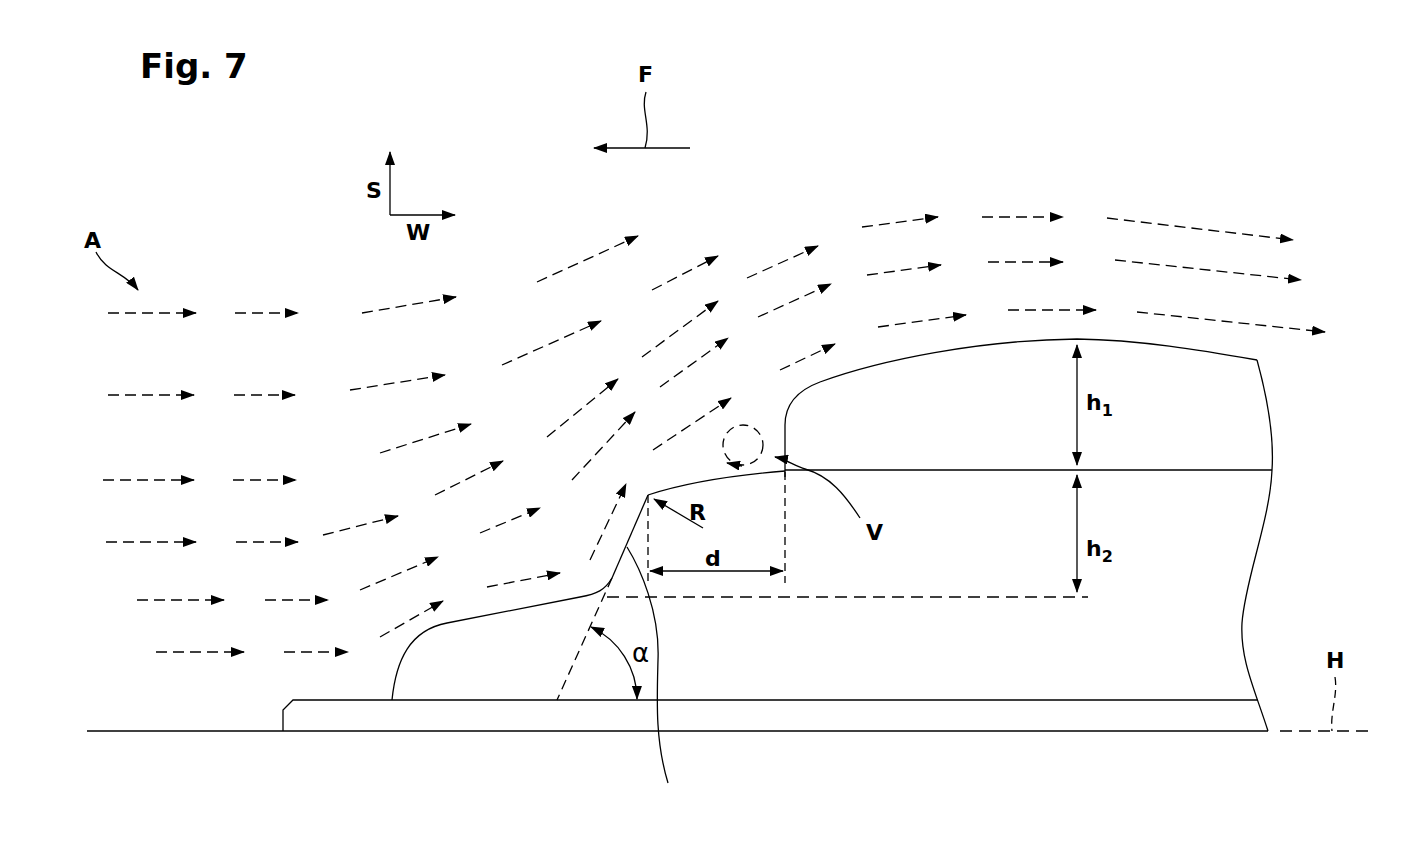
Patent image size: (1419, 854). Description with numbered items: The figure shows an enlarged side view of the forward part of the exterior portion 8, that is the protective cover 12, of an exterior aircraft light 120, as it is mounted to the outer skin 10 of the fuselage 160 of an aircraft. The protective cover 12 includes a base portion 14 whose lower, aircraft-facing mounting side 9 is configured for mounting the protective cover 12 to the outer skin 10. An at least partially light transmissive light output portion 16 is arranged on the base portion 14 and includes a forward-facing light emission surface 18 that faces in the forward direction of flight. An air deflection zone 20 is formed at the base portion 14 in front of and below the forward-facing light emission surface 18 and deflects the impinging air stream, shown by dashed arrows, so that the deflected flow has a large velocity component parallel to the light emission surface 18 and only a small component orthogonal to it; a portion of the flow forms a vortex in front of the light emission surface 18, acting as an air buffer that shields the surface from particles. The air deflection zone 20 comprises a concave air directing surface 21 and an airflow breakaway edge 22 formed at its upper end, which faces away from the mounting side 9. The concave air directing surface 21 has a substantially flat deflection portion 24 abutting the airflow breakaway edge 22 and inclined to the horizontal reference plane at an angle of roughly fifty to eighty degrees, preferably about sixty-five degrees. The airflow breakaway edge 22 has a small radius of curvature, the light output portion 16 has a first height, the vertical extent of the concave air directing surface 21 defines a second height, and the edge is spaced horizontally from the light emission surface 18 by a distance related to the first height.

The exterior portion 8 is at (1376, 305).
The mounting side 9 is at (565, 742).
The outer skin 10 is at (243, 731).
The protective cover 12 is at (1336, 428).
The base portion 14 is at (1290, 563).
The light output portion 16 is at (1288, 396).
The forward-facing light emission surface 18 is at (768, 420).
The air deflection zone 20 is at (606, 506).
The concave air directing surface 21 is at (615, 550).
The airflow breakaway edge 22 is at (647, 488).
The deflection portion 24 is at (658, 684).
The exterior aircraft light 120 is at (1177, 191).
The fuselage 160 is at (768, 798).